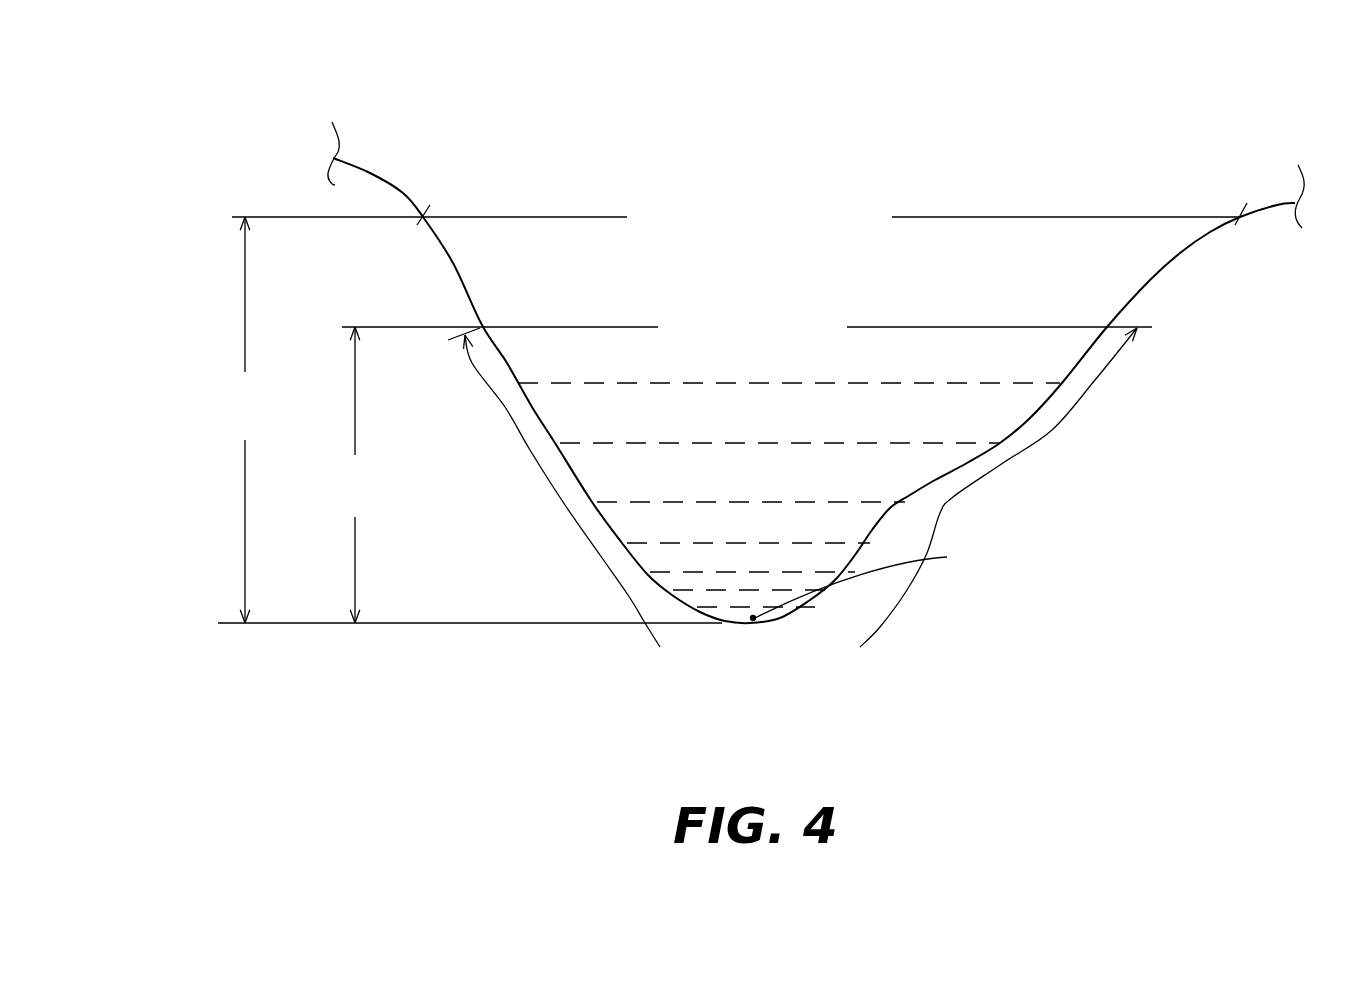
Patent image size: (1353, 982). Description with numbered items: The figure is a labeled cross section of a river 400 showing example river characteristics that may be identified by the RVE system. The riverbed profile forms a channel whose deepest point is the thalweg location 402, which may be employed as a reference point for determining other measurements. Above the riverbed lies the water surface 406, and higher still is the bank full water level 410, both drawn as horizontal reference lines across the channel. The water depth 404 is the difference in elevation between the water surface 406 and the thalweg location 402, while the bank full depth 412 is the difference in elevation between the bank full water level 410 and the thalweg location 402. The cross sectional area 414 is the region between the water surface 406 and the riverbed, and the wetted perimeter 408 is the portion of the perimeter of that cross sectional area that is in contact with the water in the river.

The river 400 is at (1072, 145).
The thalweg location 402 is at (1017, 582).
The water depth 404 is at (375, 518).
The water surface 406 is at (773, 317).
The wetted perimeter 408 is at (662, 647).
The bank full water level 410 is at (820, 207).
The bank full depth 412 is at (227, 378).
The cross sectional area 414 is at (883, 403).